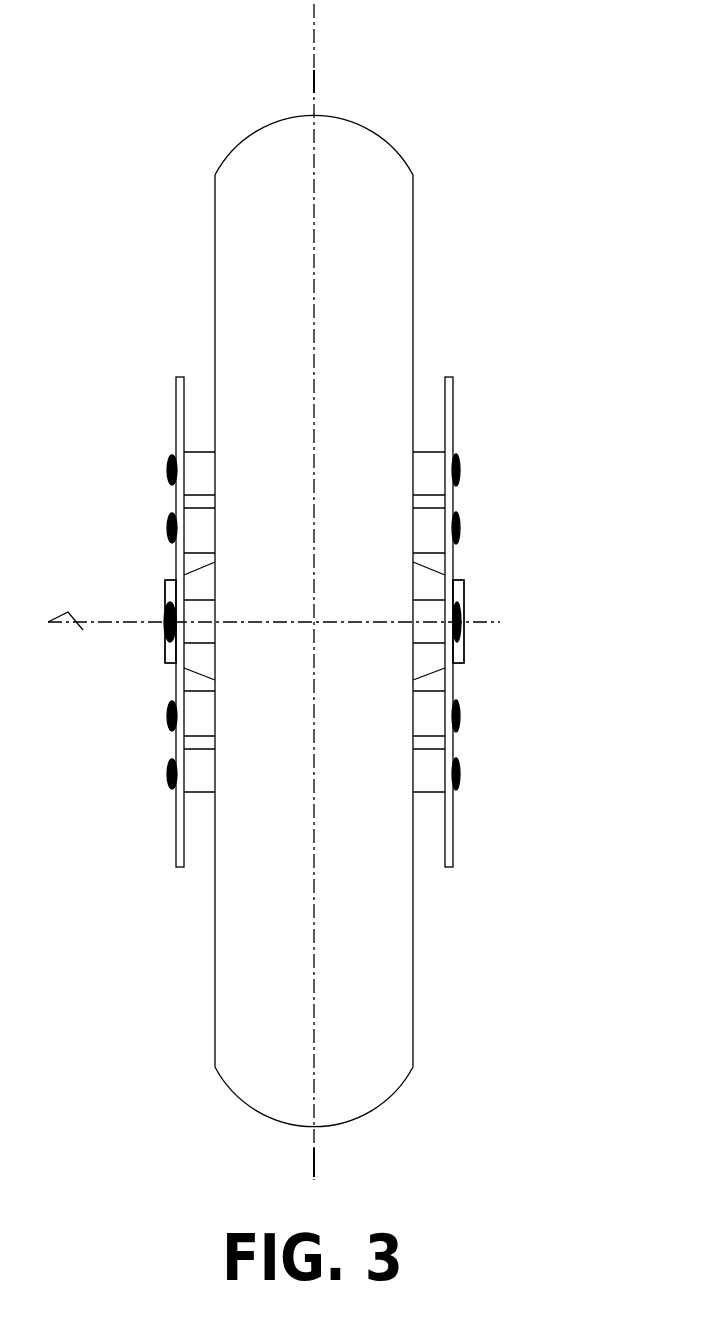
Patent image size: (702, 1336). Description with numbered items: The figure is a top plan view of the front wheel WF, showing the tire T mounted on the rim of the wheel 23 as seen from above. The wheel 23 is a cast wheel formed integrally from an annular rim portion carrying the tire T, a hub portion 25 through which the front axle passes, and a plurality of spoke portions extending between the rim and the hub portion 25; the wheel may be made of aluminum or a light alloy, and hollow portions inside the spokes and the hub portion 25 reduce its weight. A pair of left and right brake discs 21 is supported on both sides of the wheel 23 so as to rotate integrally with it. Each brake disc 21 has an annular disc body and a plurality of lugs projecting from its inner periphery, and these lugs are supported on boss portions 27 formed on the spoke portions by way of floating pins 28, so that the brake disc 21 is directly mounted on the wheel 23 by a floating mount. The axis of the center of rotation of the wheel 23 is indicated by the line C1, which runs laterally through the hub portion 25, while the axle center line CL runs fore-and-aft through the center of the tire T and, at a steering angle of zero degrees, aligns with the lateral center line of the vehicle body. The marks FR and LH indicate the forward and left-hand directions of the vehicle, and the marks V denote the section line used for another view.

The brake disc 21 is at (176, 377).
The boss portion 27 is at (200, 525).
The floating pin 28 is at (166, 460).
The hub portion 25 is at (465, 598).
The wheel 23 is at (314, 621).
The tire T is at (400, 212).
The front wheel WF is at (428, 104).
The axle center line CL is at (314, 148).
The axis of rotation C1 is at (482, 622).
The left-hand direction LH is at (54, 611).
The front direction FR is at (306, 12).
The section line V is at (318, 80).